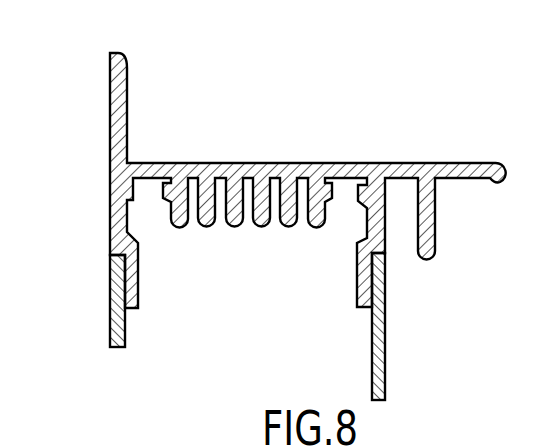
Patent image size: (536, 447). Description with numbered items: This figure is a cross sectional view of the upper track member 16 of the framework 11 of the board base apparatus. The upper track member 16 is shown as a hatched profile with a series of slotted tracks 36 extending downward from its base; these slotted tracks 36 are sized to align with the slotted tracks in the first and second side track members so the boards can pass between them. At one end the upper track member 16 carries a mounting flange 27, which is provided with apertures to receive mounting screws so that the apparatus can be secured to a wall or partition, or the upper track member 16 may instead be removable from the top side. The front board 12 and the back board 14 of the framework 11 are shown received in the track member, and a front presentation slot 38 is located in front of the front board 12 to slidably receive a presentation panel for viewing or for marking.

The framework 11 is at (308, 204).
The front board 12 is at (385, 322).
The back board 14 is at (110, 337).
The upper track member 16 is at (350, 163).
The mounting flange 27 is at (128, 82).
The slotted tracks 36 is at (192, 228).
The front presentation slot 38 is at (397, 227).